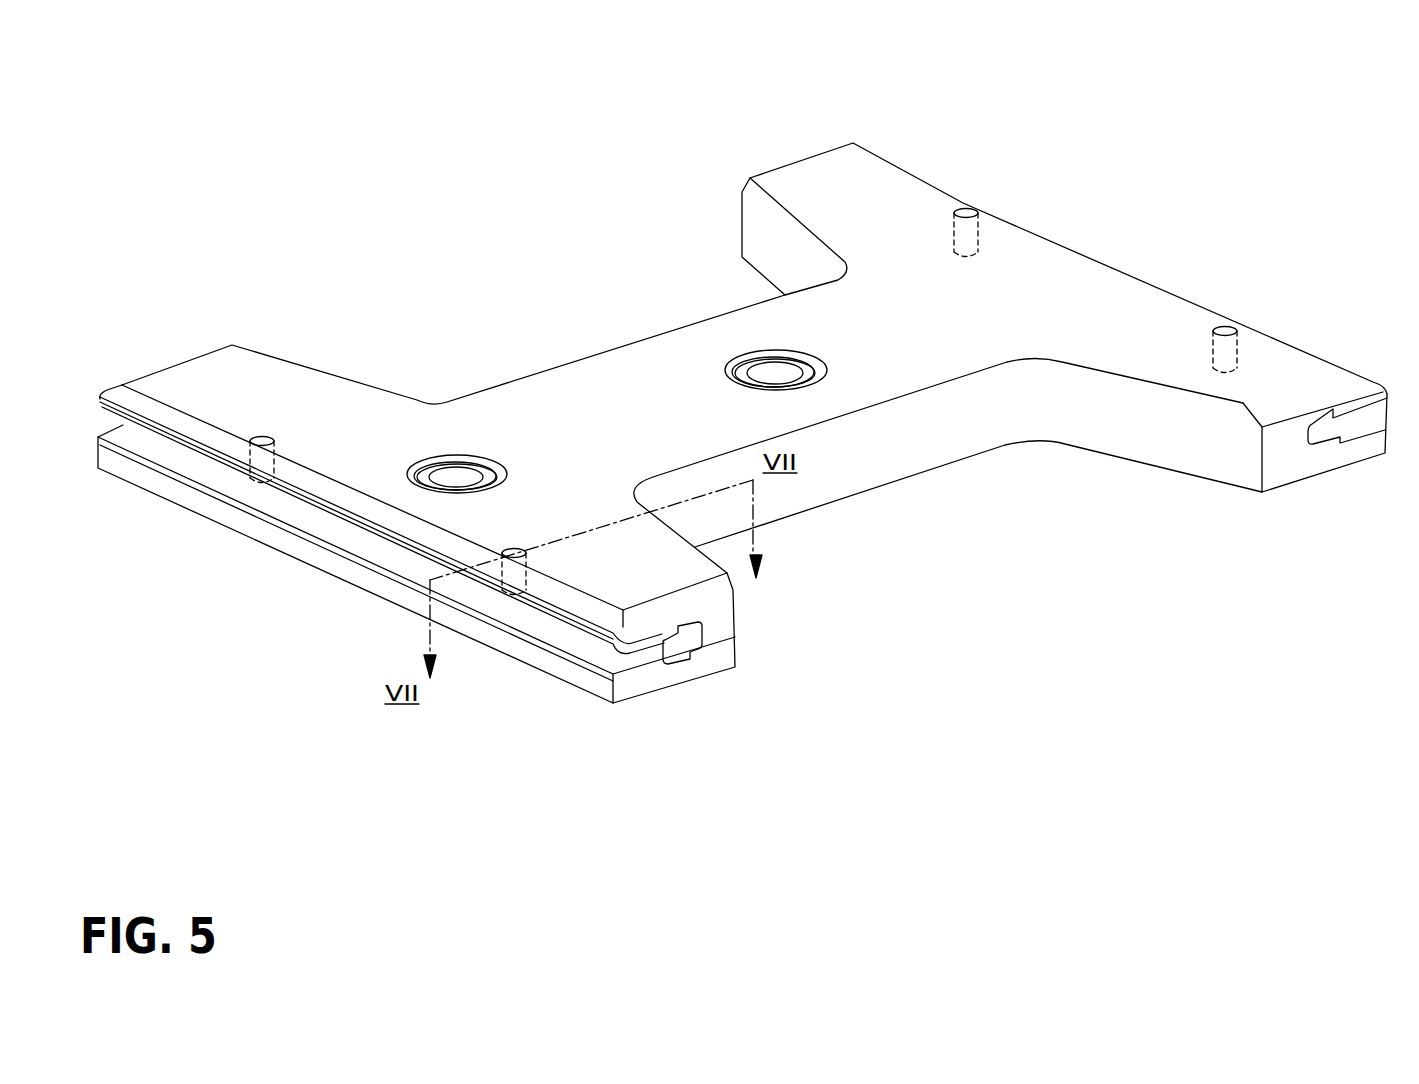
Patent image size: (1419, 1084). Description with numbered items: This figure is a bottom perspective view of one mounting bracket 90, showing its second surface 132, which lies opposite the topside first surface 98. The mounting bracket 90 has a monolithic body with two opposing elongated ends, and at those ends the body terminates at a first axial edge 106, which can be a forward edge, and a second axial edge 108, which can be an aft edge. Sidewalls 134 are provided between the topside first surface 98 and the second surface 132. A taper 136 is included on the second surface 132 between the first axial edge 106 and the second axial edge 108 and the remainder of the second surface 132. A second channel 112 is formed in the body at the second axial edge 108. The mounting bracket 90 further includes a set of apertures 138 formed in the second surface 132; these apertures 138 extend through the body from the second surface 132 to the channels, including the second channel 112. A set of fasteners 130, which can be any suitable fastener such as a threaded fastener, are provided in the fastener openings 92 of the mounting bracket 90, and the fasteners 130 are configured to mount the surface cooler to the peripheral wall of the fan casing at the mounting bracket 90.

The mounting bracket 90 is at (368, 73).
The fastener openings 92 is at (467, 448).
The first surface 98 is at (830, 505).
The first axial edge 106 is at (1090, 259).
The second axial edge 108 is at (369, 518).
The second channel 112 is at (637, 660).
The fasteners 130 is at (445, 463).
The second surface 132 is at (982, 335).
The sidewalls 134 is at (887, 462).
The taper 136 is at (185, 427).
The apertures 138 is at (265, 436).